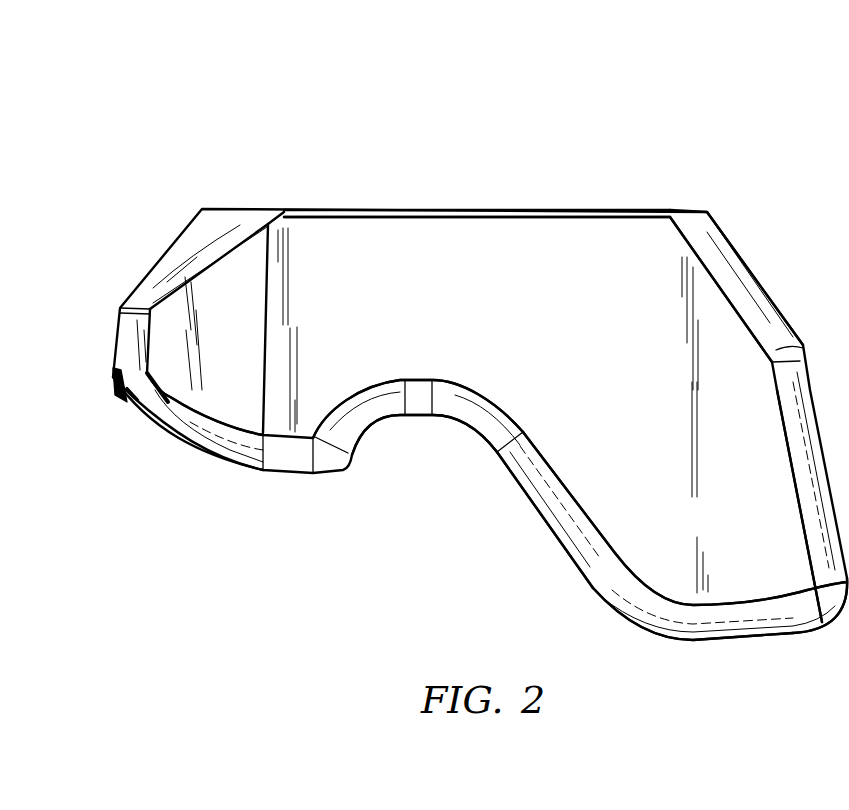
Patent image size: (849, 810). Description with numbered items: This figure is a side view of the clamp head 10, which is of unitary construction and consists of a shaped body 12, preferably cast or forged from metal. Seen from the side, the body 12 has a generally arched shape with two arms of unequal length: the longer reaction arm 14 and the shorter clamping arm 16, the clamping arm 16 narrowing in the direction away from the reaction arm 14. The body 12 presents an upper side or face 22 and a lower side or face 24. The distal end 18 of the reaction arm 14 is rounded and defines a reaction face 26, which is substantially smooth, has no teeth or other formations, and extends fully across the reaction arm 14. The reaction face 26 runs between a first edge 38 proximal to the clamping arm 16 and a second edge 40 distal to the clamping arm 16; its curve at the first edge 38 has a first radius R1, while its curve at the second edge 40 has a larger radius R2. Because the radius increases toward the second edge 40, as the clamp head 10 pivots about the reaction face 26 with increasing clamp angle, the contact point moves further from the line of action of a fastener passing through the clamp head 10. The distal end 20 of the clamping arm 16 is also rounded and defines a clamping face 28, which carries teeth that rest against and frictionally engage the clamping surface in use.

The clamp head 10 is at (530, 140).
The body 12 is at (655, 255).
The reaction arm 14 is at (680, 590).
The clamping arm 16 is at (177, 383).
The distal end 18 is at (693, 654).
The distal end 20 is at (198, 471).
The upper side or face 22 is at (359, 208).
The lower side or face 24 is at (463, 425).
The reaction face 26 is at (743, 640).
The clamping face 28 is at (235, 460).
The first edge 38 is at (590, 590).
The second edge 40 is at (830, 628).
The first radius R1 is at (593, 588).
The second radius R2 is at (823, 623).